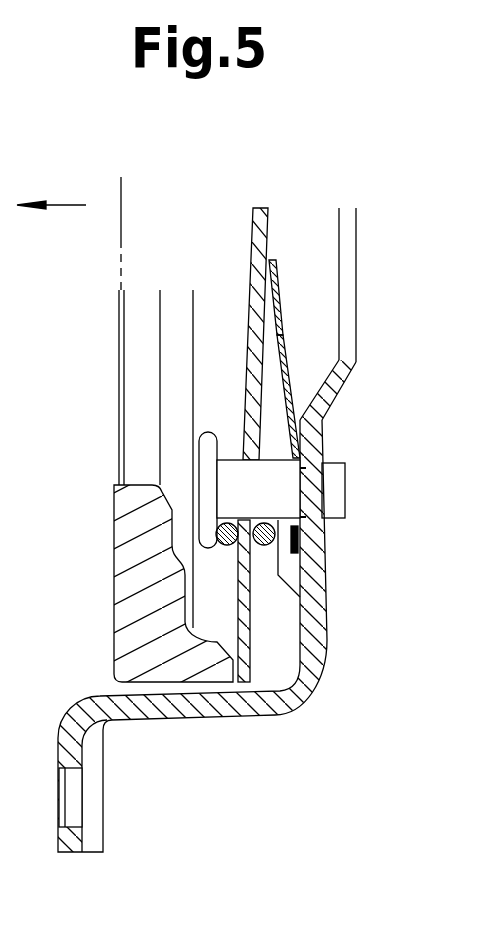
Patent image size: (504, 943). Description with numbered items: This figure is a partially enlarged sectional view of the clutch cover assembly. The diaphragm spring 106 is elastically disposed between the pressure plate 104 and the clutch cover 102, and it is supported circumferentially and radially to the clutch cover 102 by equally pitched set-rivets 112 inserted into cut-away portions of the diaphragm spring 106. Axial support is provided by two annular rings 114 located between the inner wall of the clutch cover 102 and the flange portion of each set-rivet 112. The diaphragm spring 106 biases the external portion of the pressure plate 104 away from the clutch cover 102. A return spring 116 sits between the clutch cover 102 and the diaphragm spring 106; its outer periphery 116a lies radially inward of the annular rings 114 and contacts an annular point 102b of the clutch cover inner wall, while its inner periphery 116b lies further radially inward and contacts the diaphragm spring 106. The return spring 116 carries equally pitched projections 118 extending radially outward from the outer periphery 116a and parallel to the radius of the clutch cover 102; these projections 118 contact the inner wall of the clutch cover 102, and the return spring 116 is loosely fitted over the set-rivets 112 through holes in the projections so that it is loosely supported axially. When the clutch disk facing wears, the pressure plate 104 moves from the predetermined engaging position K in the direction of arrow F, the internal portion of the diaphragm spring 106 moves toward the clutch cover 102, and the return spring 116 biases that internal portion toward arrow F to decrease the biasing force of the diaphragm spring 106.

The clutch cover 102 is at (318, 598).
The annular point 102b is at (302, 420).
The pressure plate 104 is at (218, 660).
The diaphragm spring 106 is at (240, 610).
The set-rivet 112 is at (337, 480).
The annular ring 114 is at (268, 545).
The return spring 116 is at (322, 433).
The outer periphery 116a is at (294, 420).
The inner periphery 116b is at (277, 278).
The projection 118 is at (298, 545).
The predetermined engaging position K is at (122, 192).
The arrow F is at (51, 189).